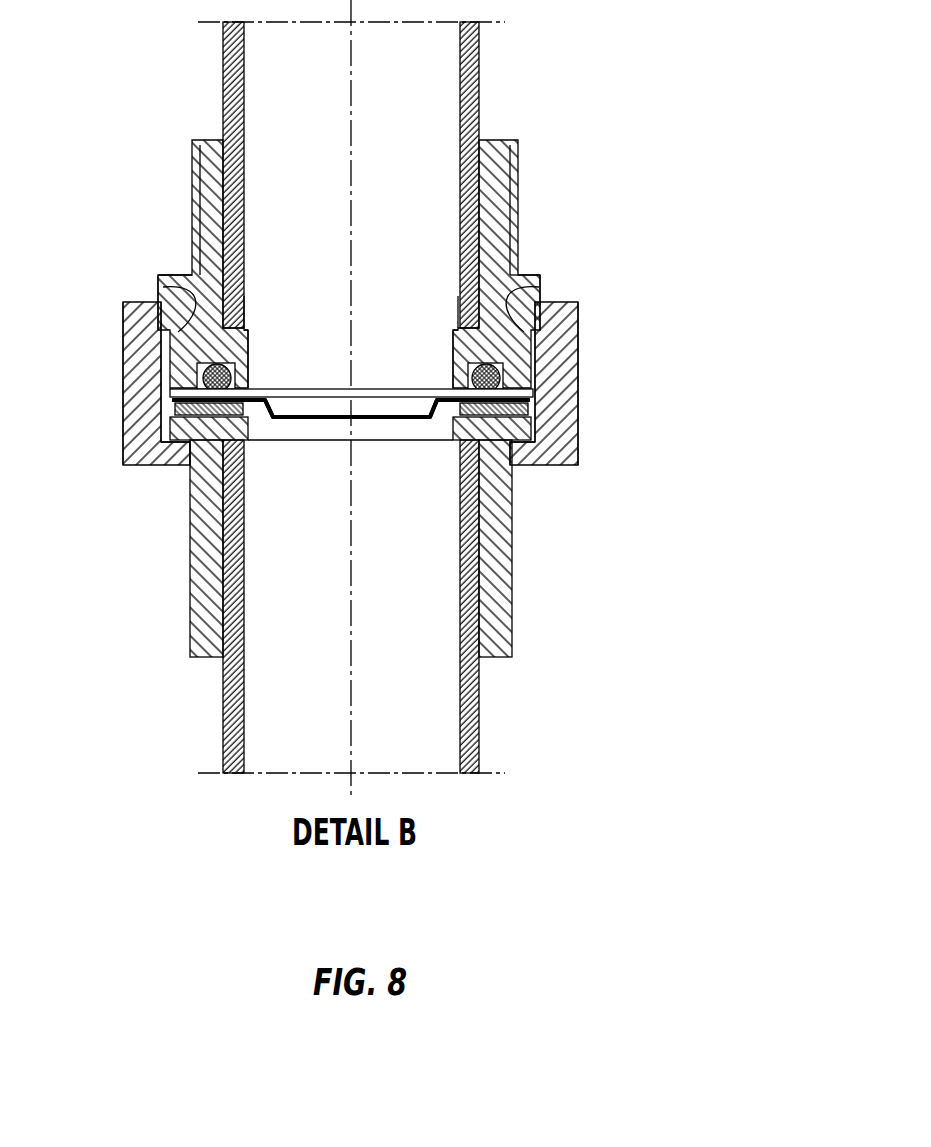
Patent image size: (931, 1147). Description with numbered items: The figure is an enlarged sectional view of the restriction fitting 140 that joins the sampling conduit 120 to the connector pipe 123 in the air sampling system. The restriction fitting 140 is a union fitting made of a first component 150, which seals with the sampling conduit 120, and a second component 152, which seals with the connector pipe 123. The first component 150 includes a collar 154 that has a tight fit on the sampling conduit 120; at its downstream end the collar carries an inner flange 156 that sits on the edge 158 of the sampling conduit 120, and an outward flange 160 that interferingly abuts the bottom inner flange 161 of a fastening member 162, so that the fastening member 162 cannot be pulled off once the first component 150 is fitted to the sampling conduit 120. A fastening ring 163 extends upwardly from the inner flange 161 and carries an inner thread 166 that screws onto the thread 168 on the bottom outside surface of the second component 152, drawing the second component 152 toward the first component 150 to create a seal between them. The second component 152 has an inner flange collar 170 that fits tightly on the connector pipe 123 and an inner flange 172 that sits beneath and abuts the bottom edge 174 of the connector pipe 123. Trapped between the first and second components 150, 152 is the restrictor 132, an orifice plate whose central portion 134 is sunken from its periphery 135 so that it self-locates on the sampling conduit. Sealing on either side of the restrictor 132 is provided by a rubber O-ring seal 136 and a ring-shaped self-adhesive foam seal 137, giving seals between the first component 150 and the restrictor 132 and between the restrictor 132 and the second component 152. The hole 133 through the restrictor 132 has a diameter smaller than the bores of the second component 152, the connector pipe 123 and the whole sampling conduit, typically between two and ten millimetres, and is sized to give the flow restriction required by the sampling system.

The sampling conduit 120 is at (490, 753).
The connector pipe 123 is at (490, 45).
The restrictor 132 is at (308, 427).
The hole 133 is at (357, 405).
The central portion 134 is at (388, 427).
The periphery 135 is at (165, 400).
The O-ring seal 136 is at (236, 364).
The self-adhesive foam seal 137 is at (262, 410).
The restriction fitting 140 is at (335, 272).
The first component 150 is at (333, 479).
The second component 152 is at (519, 184).
The collar 154 is at (513, 537).
The inner flange 156 is at (262, 436).
The edge 158 is at (248, 470).
The outward flange 160 is at (162, 425).
The bottom inner flange 161 is at (167, 469).
The fastening member 162 is at (121, 371).
The fastening ring 163 is at (122, 345).
The inner thread 166 is at (172, 315).
The thread 168 is at (150, 333).
The inner flange collar 170 is at (191, 183).
The inner flange 172 is at (262, 328).
The bottom edge 174 is at (253, 297).